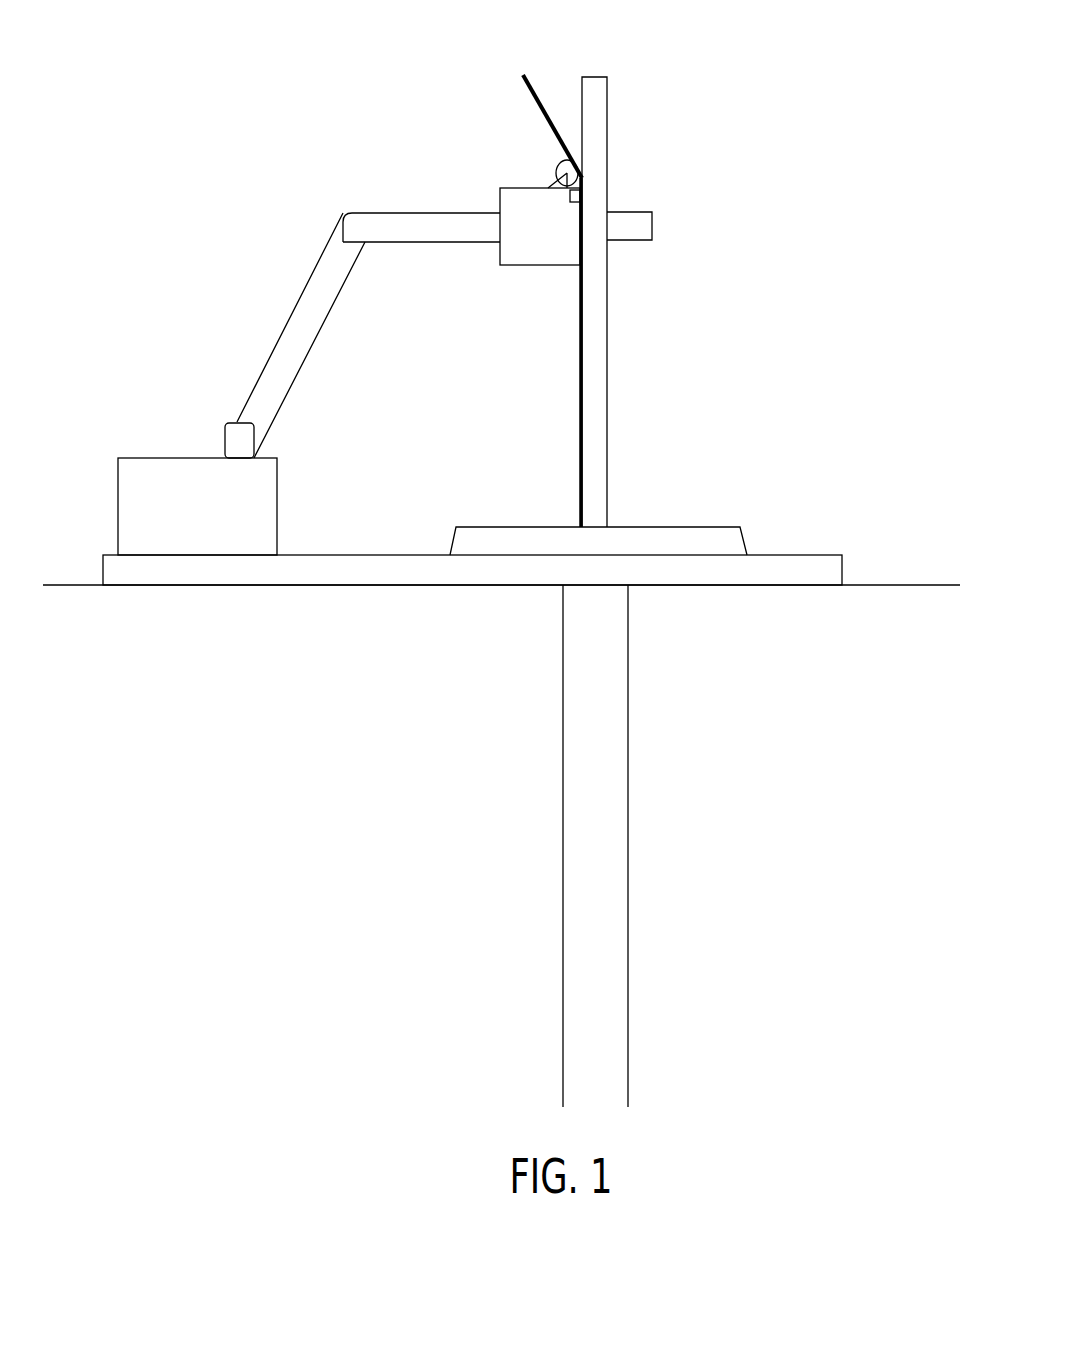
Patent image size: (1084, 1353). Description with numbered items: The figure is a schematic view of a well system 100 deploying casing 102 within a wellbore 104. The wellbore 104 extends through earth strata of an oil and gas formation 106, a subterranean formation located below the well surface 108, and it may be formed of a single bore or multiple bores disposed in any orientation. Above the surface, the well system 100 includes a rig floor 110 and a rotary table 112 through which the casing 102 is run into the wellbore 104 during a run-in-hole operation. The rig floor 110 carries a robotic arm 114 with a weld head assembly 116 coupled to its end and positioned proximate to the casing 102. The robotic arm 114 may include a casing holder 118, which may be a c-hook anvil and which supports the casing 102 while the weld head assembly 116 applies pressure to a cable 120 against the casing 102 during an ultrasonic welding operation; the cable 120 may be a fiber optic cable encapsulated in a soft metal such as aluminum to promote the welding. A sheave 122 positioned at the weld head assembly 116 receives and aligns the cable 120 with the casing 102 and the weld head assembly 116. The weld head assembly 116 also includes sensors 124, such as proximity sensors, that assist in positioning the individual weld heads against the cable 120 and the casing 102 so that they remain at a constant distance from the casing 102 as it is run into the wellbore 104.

The well system 100 is at (840, 116).
The casing 102 is at (607, 373).
The wellbore 104 is at (628, 698).
The formation 106 is at (450, 783).
The well surface 108 is at (867, 585).
The rig floor 110 is at (788, 550).
The rotary table 112 is at (685, 527).
The robotic arm 114 is at (265, 365).
The weld head assembly 116 is at (537, 265).
The casing holder 118 is at (633, 240).
The cable 120 is at (540, 113).
The sheave 122 is at (558, 173).
The sensors 124 is at (570, 198).